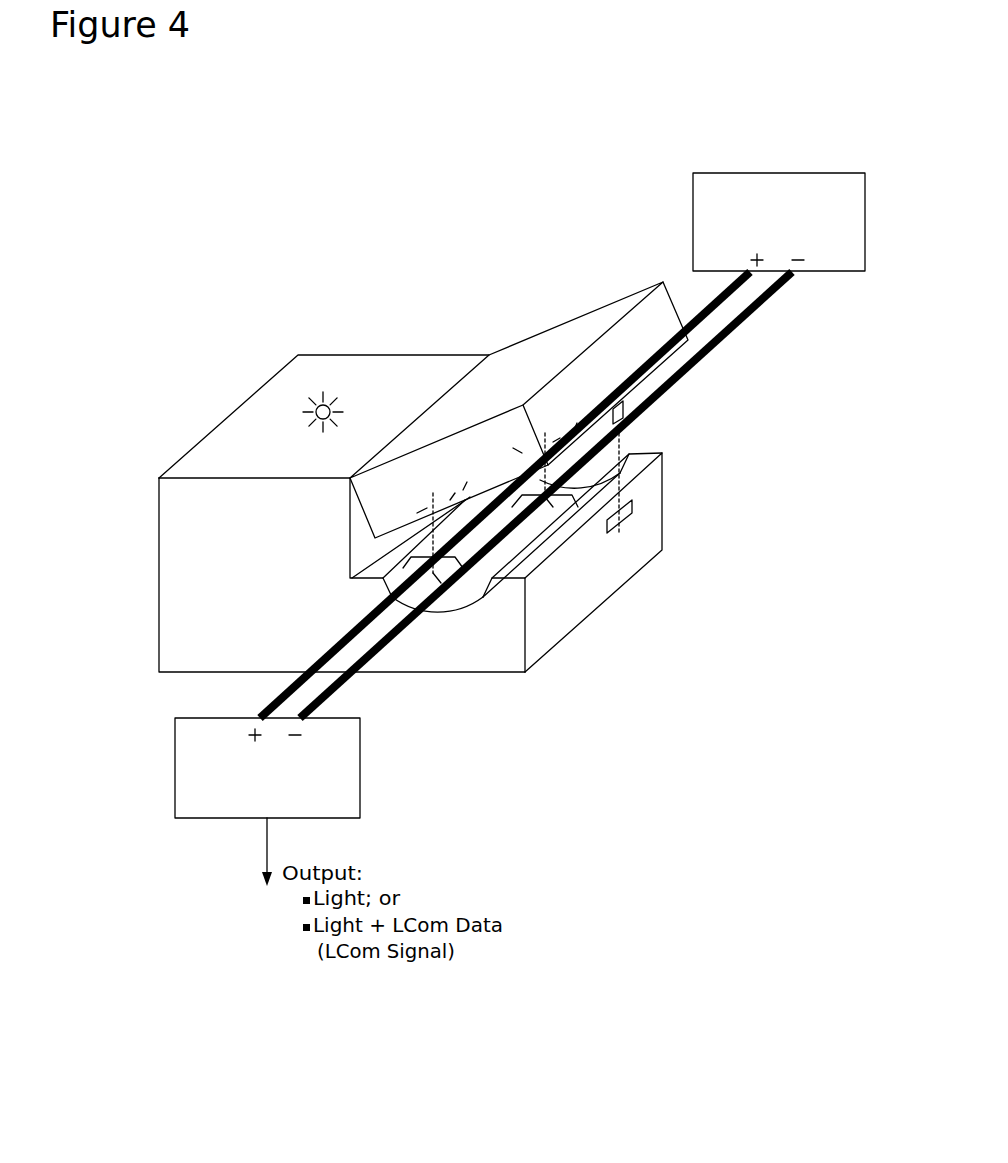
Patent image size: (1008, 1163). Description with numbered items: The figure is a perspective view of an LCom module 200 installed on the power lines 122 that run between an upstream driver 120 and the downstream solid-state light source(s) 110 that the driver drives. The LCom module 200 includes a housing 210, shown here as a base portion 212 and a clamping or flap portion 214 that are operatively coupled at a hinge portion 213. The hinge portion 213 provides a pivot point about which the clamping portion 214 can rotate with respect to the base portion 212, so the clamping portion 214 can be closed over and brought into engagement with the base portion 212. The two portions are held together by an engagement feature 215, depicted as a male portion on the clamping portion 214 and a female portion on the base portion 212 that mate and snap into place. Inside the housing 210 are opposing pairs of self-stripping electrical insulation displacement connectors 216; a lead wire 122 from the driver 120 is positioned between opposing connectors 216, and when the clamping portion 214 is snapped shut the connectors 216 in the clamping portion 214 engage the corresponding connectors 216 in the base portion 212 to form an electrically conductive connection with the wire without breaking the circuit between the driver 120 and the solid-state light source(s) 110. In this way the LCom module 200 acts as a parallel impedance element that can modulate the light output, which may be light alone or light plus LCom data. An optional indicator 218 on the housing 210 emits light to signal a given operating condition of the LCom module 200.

The solid-state light source(s) 110 is at (340, 809).
The driver 120 is at (833, 204).
The power lines 122 is at (710, 320).
The LCom module 200 is at (150, 417).
The housing 210 is at (203, 664).
The base portion 212 is at (490, 662).
The hinge portion 213 is at (519, 404).
The clamping portion 214 is at (547, 348).
The engagement feature 215 is at (632, 505).
The electrical connectors 216 is at (415, 565).
The indicator 218 is at (313, 410).